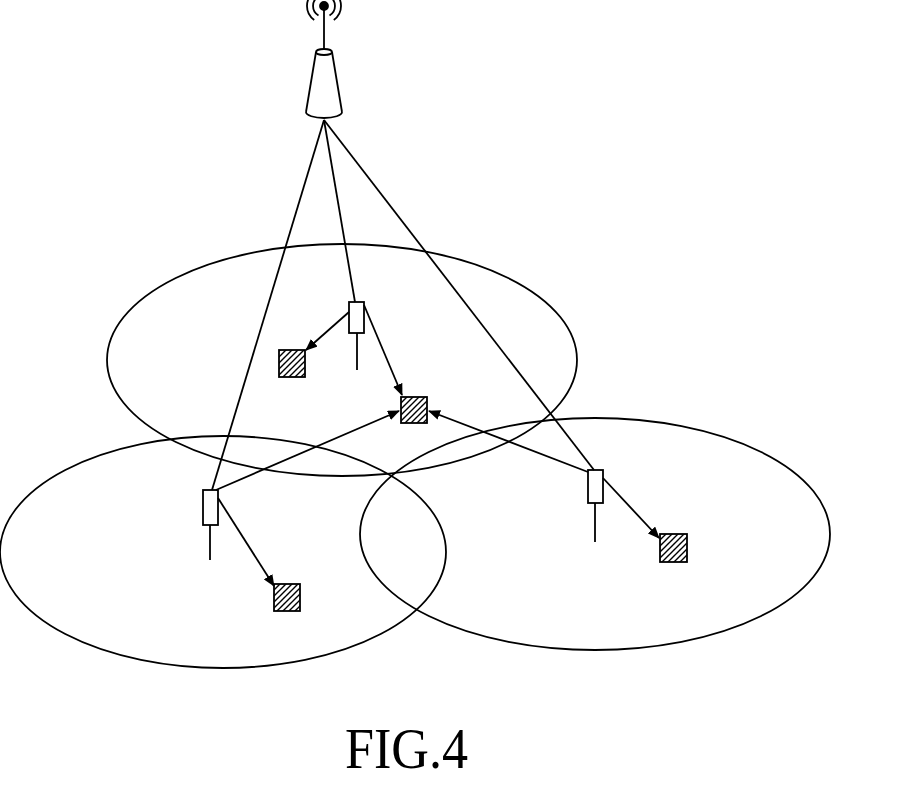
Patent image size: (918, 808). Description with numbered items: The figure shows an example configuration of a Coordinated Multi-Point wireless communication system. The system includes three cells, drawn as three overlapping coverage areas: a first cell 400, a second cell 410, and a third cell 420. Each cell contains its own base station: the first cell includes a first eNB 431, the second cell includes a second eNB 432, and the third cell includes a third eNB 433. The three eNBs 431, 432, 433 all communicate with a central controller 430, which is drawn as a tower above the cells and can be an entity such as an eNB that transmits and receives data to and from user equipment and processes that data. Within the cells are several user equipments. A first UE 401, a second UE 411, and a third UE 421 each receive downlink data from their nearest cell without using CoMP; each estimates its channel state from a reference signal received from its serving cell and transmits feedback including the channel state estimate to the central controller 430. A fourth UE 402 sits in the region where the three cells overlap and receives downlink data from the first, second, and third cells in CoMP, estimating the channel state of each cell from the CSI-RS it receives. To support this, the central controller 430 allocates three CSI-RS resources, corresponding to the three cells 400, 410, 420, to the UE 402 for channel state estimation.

The cell 400 is at (490, 268).
The UE 401 is at (291, 348).
The UE 402 is at (411, 395).
The cell 410 is at (78, 456).
The UE 411 is at (287, 582).
The cell 420 is at (640, 418).
The UE 421 is at (673, 532).
The central controller 430 is at (338, 72).
The first eNB 431 is at (365, 304).
The second eNB 432 is at (202, 507).
The third eNB 433 is at (586, 487).